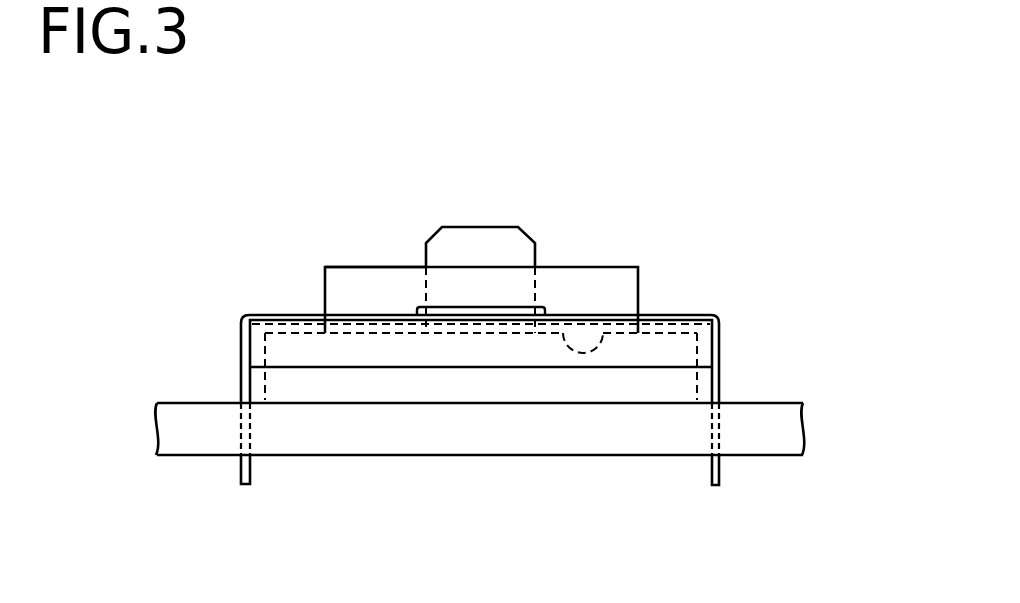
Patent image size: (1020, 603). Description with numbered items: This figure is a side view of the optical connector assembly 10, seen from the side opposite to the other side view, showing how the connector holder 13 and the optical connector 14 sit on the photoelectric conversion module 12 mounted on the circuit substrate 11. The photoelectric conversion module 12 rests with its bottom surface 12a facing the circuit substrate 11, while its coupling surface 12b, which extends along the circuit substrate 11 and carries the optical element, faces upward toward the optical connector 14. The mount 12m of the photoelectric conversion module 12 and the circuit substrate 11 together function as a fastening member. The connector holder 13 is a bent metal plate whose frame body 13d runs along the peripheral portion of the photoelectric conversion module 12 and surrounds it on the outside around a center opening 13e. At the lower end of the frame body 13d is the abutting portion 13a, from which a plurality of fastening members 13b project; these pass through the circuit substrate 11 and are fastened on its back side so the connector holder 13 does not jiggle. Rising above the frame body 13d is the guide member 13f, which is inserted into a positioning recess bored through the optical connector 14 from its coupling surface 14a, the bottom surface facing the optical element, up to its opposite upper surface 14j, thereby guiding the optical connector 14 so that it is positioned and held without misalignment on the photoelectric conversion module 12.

The optical connector assembly 10 is at (281, 312).
The circuit substrate 11 is at (762, 403).
The photoelectric conversion module 12 is at (587, 417).
The bottom surface 12a is at (398, 403).
The coupling surface 12b is at (668, 315).
The mount 12m is at (493, 390).
The connector holder 13 is at (241, 314).
The abutting portion 13a is at (243, 412).
The fastening members 13b is at (240, 468).
The frame body 13d is at (722, 352).
The center opening 13e is at (342, 330).
The guide member 13f is at (492, 227).
The optical connector 14 is at (347, 267).
The coupling surface 14a is at (600, 330).
The upper surface 14j is at (378, 267).